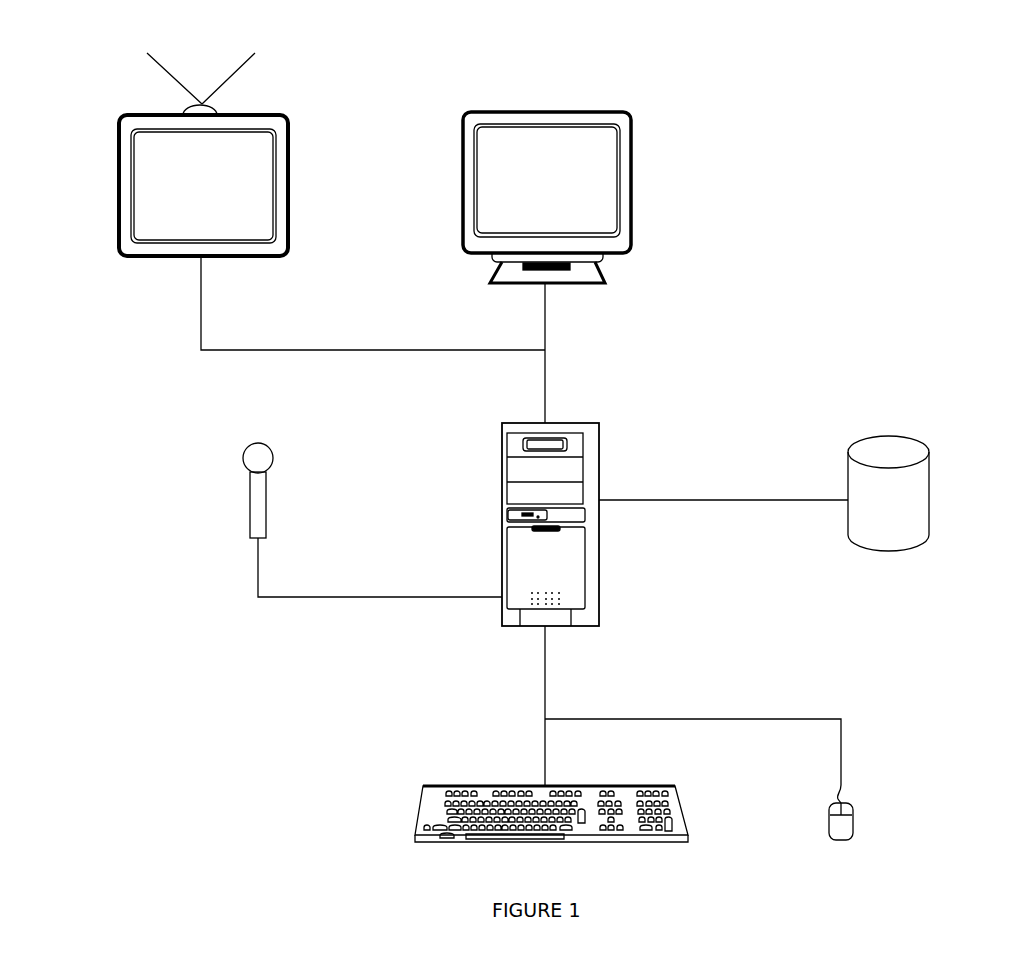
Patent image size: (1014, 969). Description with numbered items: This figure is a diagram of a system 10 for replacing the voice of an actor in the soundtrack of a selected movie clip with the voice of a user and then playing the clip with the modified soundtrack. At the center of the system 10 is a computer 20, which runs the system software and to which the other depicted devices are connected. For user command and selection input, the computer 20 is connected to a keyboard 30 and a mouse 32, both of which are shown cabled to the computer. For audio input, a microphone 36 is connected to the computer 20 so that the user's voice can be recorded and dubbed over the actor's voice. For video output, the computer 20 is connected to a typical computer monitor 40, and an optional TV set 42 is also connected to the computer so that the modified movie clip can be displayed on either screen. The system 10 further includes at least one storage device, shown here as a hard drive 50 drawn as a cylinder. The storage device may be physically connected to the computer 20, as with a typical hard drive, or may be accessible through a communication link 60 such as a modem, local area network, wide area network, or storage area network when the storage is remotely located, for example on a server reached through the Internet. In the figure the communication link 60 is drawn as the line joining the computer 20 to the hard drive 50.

The system 10 is at (868, 115).
The computer 20 is at (500, 467).
The keyboard 30 is at (412, 818).
The mouse 32 is at (855, 818).
The microphone 36 is at (243, 527).
The computer monitor 40 is at (462, 225).
The TV set 42 is at (110, 221).
The hard drive 50 is at (936, 475).
The communication link 60 is at (723, 493).